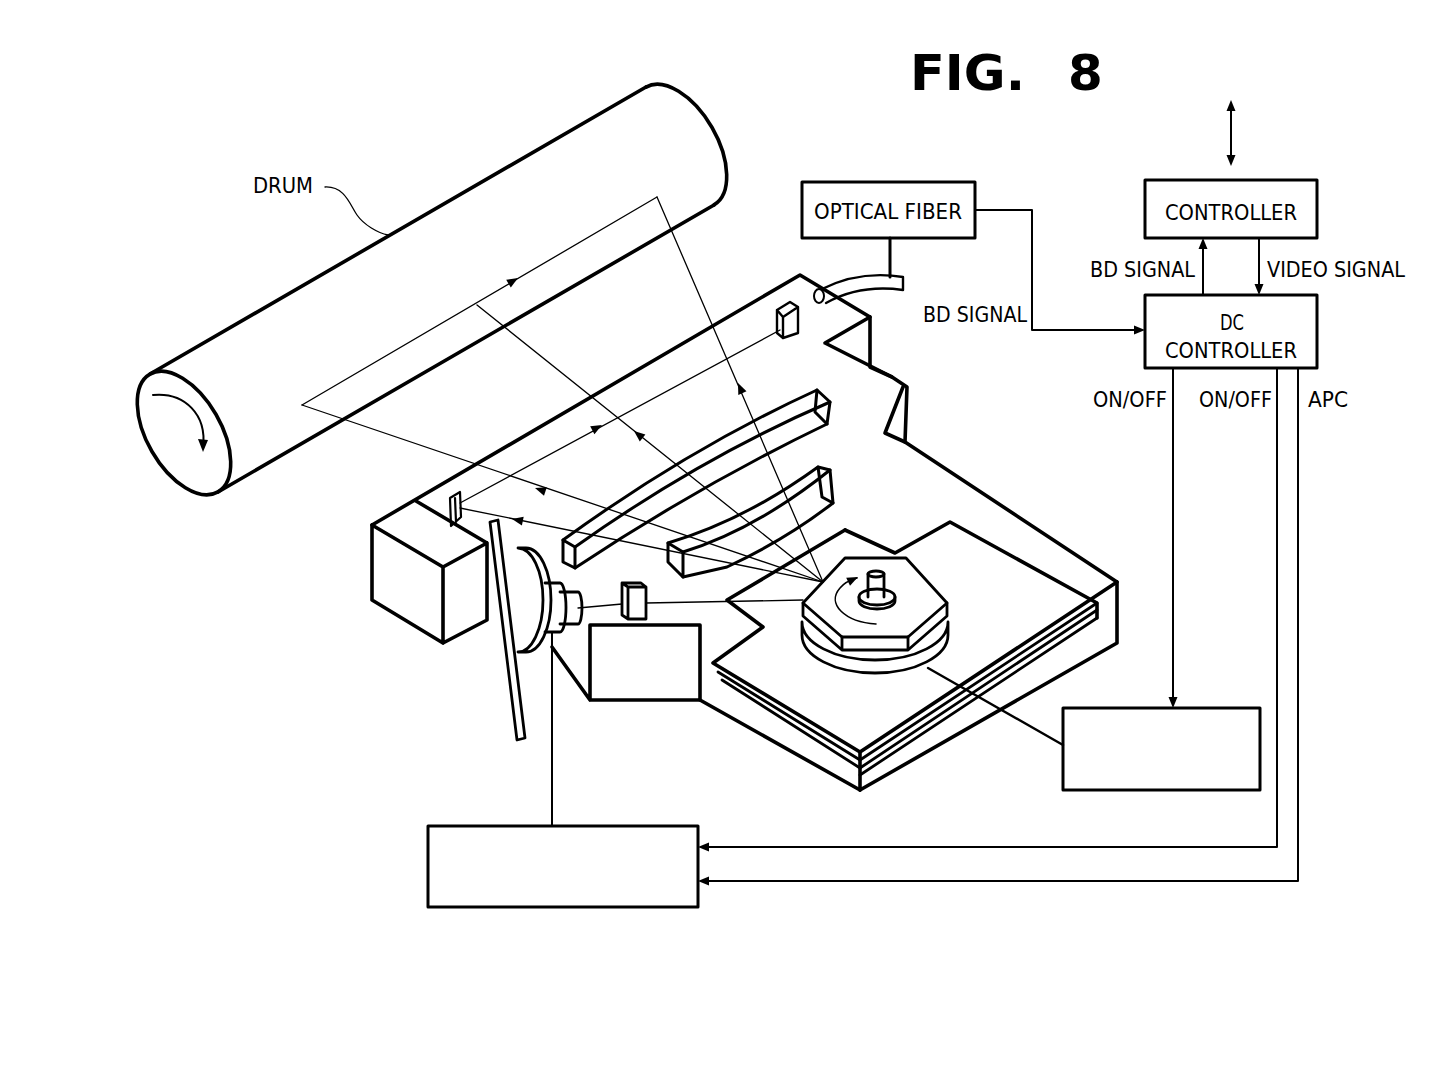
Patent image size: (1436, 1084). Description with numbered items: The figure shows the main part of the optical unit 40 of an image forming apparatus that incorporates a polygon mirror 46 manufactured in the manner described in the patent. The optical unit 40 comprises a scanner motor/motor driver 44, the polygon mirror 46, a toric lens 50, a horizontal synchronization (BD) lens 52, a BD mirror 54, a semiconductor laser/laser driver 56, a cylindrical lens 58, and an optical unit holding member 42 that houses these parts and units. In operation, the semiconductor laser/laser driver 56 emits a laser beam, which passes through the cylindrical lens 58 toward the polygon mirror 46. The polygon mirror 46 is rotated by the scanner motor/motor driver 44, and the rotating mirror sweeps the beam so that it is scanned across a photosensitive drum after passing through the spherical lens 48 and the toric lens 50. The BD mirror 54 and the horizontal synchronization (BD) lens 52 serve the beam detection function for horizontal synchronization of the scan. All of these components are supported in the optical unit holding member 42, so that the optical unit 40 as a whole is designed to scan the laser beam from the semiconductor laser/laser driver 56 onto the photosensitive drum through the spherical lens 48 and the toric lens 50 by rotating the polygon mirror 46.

The optical unit 40 is at (1025, 898).
The optical unit holding member 42 is at (620, 683).
The scanner motor/motor driver 44 is at (1200, 708).
The polygon mirror 46 is at (913, 585).
The spherical lens 48 is at (828, 478).
The toric lens 50 is at (818, 392).
The horizontal synchronization (BD) lens 52 is at (777, 285).
The BD mirror 54 is at (448, 508).
The semiconductor laser/laser driver 56 is at (493, 826).
The cylindrical lens 58 is at (637, 618).